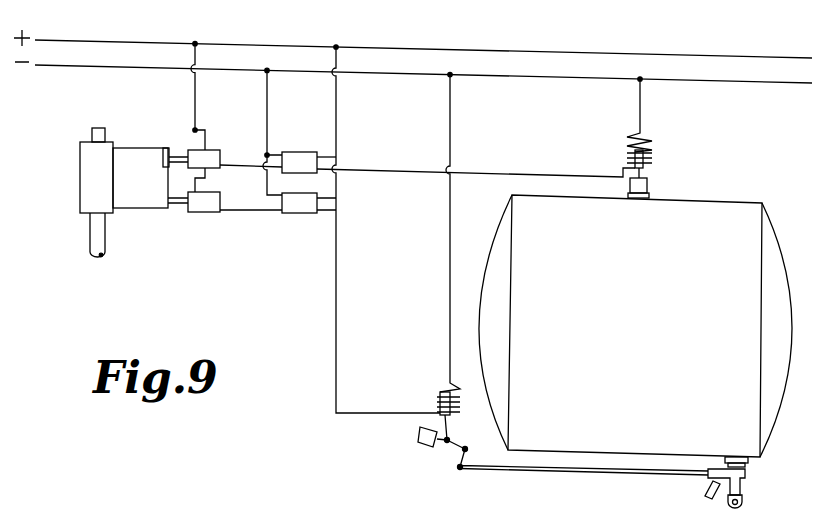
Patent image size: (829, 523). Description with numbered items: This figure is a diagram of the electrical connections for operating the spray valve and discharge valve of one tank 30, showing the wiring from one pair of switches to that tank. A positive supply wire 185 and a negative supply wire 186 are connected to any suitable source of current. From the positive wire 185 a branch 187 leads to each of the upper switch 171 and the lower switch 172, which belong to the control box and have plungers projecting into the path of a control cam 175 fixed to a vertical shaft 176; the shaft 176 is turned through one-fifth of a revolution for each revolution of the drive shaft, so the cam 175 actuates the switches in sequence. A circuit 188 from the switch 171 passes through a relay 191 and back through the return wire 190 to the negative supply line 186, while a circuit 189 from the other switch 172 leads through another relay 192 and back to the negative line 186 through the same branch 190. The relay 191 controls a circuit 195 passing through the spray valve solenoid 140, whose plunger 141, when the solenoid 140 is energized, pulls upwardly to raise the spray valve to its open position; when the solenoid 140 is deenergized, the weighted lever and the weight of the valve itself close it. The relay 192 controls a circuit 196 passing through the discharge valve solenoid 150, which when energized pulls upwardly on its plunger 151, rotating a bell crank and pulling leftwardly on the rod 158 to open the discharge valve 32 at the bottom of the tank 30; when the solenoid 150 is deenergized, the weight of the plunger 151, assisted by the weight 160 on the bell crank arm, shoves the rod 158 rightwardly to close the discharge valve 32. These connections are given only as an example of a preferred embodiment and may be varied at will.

The positive supply wire 185 is at (102, 10).
The negative supply wire 186 is at (114, 77).
The branch 187 is at (194, 80).
The circuit 188 is at (245, 165).
The circuit 189 is at (262, 210).
The return wire 190 is at (272, 84).
The relay 191 is at (307, 142).
The relay 192 is at (308, 210).
The upper switch 171 is at (200, 115).
The lower switch 172 is at (210, 204).
The control cam 175 is at (145, 200).
The vertical shaft 176 is at (95, 233).
The circuit 195 is at (492, 144).
The circuit 196 is at (334, 280).
The solenoid 140 is at (652, 147).
The plunger 141 is at (644, 173).
The tank 30 is at (735, 201).
The discharge valve 32 is at (747, 487).
The rod 158 is at (593, 470).
The solenoid 150 is at (440, 391).
The plunger 151 is at (437, 403).
The weight 160 is at (418, 441).